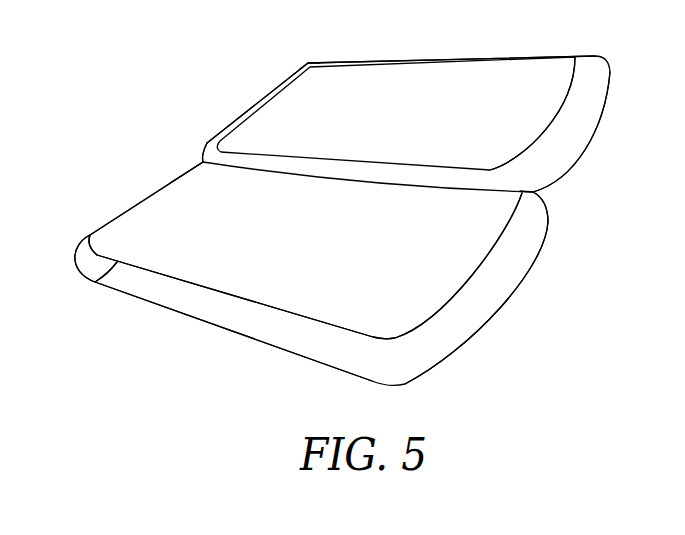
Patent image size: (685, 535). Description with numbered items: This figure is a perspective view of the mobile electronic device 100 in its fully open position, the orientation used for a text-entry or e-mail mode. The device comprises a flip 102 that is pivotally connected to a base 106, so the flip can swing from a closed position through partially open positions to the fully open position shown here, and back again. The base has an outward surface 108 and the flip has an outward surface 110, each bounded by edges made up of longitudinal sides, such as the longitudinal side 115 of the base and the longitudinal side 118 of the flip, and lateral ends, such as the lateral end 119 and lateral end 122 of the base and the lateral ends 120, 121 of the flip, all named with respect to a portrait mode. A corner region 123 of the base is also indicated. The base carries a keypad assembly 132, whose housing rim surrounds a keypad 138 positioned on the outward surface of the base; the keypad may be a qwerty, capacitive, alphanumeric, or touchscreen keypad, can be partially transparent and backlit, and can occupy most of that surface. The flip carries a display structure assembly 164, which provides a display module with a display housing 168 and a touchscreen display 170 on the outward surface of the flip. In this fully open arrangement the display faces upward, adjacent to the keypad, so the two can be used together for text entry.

The mobile electronic device 100 is at (179, 110).
The flip 102 is at (607, 66).
The base 106 is at (488, 327).
The outward surface 108 is at (95, 282).
The outward surface 110 is at (310, 61).
The longitudinal side 115 is at (210, 323).
The longitudinal side 118 is at (390, 58).
The lateral end 119 is at (125, 212).
The lateral end 120 is at (288, 75).
The lateral end 121 is at (588, 138).
The lateral end 122 is at (536, 258).
The corner of base housing 123 is at (84, 234).
The keypad assembly 132 is at (185, 183).
The keypad 138 is at (313, 305).
The display structure assembly 164 is at (518, 155).
The display housing 168 is at (603, 105).
The touchscreen display 170 is at (497, 72).